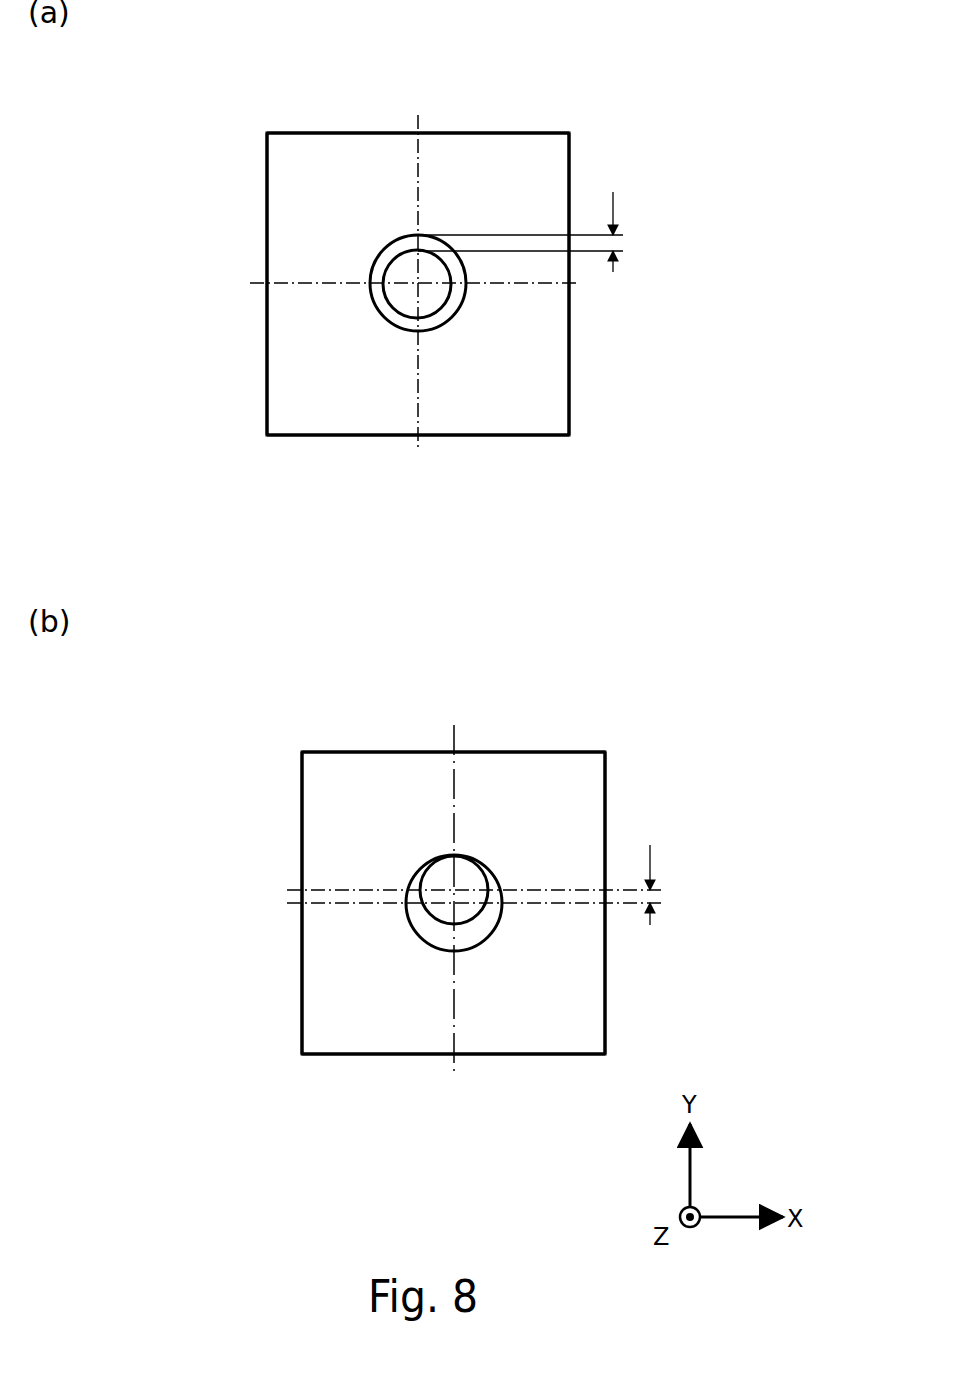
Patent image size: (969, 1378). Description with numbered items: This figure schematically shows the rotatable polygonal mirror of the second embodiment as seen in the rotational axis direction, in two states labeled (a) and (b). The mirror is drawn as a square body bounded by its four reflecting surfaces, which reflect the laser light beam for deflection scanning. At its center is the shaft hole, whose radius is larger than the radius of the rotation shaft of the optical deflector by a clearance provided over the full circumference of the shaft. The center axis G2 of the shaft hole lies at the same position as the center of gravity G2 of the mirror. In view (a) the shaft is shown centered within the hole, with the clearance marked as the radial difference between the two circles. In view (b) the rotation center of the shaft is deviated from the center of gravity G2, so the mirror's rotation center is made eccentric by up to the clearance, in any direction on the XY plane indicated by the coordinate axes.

The center axis of shaft hole G2 is at (454, 903).